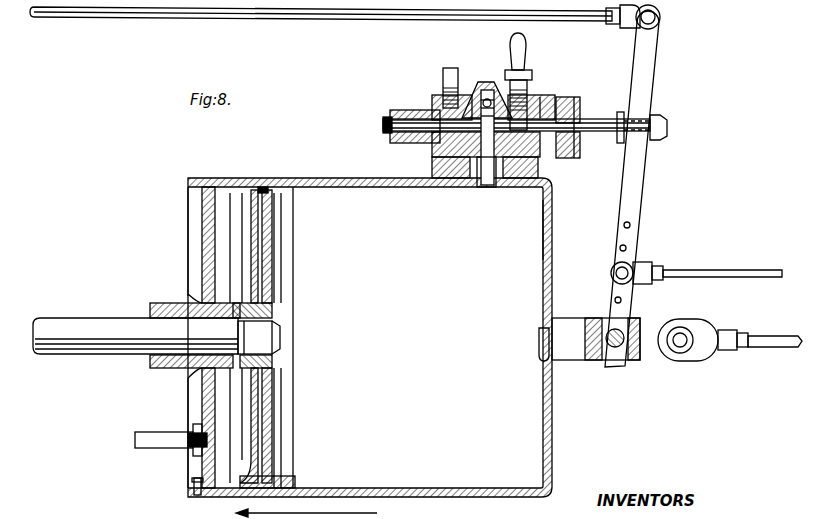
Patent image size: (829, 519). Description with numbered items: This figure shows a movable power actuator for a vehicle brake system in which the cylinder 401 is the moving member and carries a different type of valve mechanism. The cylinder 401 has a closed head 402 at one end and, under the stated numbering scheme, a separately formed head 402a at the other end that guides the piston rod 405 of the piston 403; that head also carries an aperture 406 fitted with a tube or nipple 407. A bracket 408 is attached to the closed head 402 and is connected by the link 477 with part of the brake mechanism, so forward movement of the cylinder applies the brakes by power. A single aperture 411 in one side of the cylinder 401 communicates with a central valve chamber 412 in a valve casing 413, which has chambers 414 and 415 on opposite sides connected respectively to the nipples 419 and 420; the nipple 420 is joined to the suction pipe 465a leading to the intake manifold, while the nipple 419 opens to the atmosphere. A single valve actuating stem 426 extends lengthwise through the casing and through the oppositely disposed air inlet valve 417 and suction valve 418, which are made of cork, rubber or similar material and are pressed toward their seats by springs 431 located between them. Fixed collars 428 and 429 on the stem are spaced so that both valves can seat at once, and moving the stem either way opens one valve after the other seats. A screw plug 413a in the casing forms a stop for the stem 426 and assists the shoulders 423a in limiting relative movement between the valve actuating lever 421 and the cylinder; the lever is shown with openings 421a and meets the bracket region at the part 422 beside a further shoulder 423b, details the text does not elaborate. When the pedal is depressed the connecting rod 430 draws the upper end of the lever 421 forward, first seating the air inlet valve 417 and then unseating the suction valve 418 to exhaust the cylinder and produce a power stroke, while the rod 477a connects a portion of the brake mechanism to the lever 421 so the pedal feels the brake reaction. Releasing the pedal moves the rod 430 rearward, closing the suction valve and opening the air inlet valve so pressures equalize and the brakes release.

The cylinder 401 is at (333, 160).
The closed head 402 is at (552, 228).
The separately formed head 402a is at (204, 270).
The piston 403 is at (256, 276).
The piston rod 405 is at (72, 325).
The aperture 406 is at (200, 455).
The tube or nipple 407 is at (145, 432).
The bracket 408 is at (660, 358).
The aperture 411 is at (487, 187).
The central valve chamber 412 is at (487, 85).
The valve casing 413 is at (523, 105).
The screw plug 413a is at (392, 118).
The chamber 414 is at (438, 104).
The chamber 415 is at (540, 112).
The air inlet valve 417 is at (455, 163).
The suction valve 418 is at (505, 150).
The nipple 419 is at (450, 85).
The nipple 420 is at (525, 85).
The valve actuating lever 421 is at (640, 193).
The holes 421a is at (627, 248).
The block 422 is at (596, 360).
The shoulders 423a is at (612, 326).
The bracket 423b is at (543, 362).
The valve stem 426 is at (590, 119).
The fixed collar 428 is at (440, 138).
The fixed collar 429 is at (556, 150).
The connecting rod 430 is at (155, 12).
The springs 431 is at (485, 100).
The suction pipe 465a is at (518, 42).
The link 477 is at (755, 340).
The rod 477a is at (692, 270).